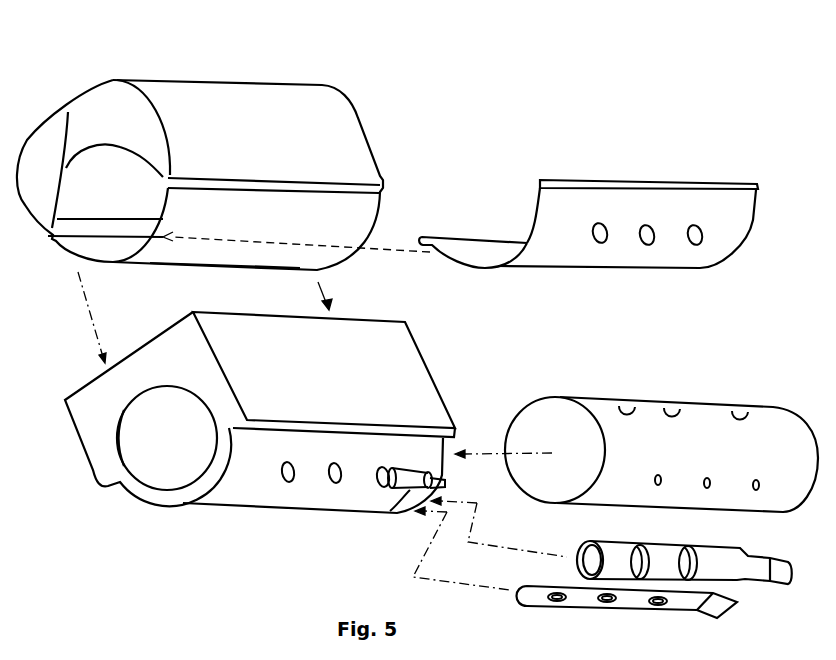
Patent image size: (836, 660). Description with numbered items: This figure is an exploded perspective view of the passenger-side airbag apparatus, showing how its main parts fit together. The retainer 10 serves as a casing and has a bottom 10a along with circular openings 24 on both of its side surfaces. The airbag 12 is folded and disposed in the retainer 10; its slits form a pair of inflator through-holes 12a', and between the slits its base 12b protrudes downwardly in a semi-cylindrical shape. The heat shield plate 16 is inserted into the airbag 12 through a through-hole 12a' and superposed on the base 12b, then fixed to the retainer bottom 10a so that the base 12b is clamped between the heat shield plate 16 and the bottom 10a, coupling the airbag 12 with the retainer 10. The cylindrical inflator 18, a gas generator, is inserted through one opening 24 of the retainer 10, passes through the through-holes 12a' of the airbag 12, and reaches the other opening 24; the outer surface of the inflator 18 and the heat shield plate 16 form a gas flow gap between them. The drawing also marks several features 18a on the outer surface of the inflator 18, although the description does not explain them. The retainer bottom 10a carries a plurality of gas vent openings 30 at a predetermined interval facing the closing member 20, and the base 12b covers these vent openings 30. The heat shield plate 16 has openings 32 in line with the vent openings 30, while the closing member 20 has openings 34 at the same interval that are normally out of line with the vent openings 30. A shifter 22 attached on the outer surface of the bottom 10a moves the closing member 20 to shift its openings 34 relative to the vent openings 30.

The retainer 10 is at (97, 455).
The bottom of the retainer 10a is at (240, 499).
The airbag 12 is at (216, 95).
The inflator through-hole 12a' is at (98, 151).
The airbag base 12b is at (228, 252).
The heat shield plate 16 is at (584, 199).
The cylindrical inflator 18 is at (700, 420).
The openings of insert 18a is at (620, 404).
The closing member 20 is at (726, 557).
The shifter 22 is at (412, 490).
The circular opening 24 is at (158, 387).
The gas vent opening 30 is at (286, 463).
The opening of the heat shield plate 32 is at (604, 225).
The opening of the closing member 34 is at (580, 550).